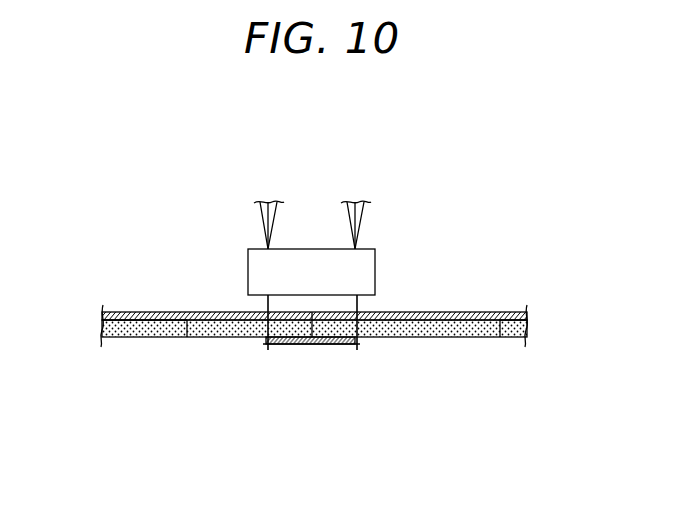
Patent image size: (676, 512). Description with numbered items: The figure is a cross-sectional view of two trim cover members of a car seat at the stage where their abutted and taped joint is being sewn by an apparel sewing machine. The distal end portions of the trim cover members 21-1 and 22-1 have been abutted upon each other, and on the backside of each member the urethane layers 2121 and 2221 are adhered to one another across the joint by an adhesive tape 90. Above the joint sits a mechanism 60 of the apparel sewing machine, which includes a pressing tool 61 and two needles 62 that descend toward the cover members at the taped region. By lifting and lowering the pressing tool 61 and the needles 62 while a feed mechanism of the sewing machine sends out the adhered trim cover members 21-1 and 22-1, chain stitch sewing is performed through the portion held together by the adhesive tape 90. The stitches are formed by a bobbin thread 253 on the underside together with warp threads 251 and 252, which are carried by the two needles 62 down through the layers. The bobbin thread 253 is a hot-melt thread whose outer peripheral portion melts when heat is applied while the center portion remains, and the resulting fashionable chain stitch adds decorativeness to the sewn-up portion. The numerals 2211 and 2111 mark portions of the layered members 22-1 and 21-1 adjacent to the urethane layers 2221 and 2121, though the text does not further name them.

The mechanism 60 is at (363, 242).
The pressing tool 61 is at (375, 270).
The needle 62 is at (277, 222).
The adhesive tape 90 is at (320, 350).
The warp thread 251 is at (254, 338).
The warp thread 252 is at (372, 338).
The bobbin thread 253 is at (285, 350).
The urethane layer 2221 is at (125, 337).
The first insulating layer region 2211 is at (191, 337).
The urethane layer 2121 is at (430, 337).
The first insulating layer region 2111 is at (509, 322).
The trim cover member 22-1 is at (143, 386).
The trim cover member 21-1 is at (474, 386).